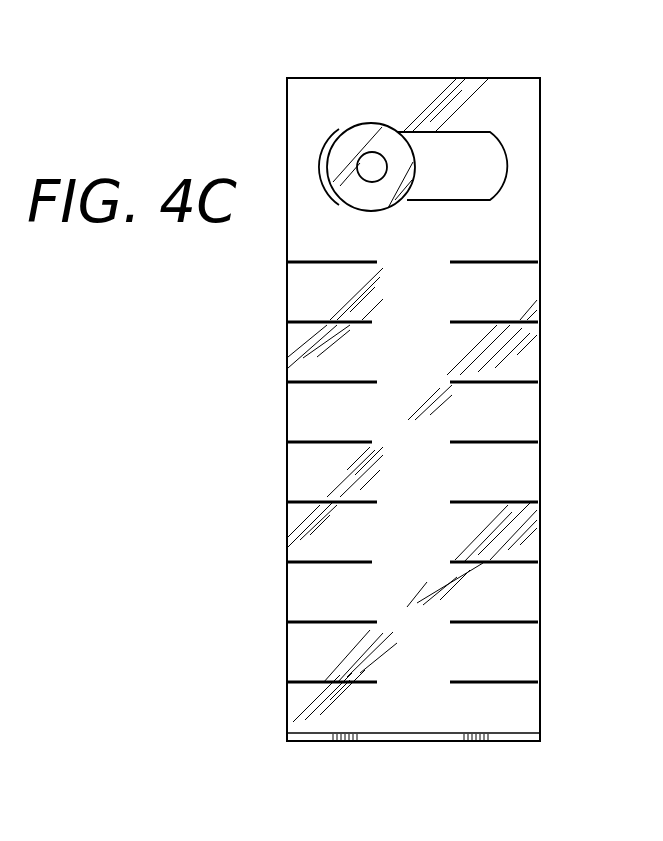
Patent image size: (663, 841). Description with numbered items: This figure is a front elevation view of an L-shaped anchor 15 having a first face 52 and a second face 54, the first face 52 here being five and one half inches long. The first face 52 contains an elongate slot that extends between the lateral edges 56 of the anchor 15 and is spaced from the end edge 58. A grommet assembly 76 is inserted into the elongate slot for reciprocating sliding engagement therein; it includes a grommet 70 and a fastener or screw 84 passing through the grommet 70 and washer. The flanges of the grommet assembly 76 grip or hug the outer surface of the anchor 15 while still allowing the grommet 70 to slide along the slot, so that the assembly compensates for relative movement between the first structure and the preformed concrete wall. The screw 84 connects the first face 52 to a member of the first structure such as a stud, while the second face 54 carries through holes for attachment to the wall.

The anchor 15 is at (484, 59).
The first face 52 is at (257, 308).
The second face 54 is at (392, 742).
The lateral edges 56 is at (540, 312).
The end edge 58 is at (383, 78).
The grommet 70 is at (371, 132).
The grommet assembly 76 is at (323, 150).
The fastener or screw 84 is at (371, 172).